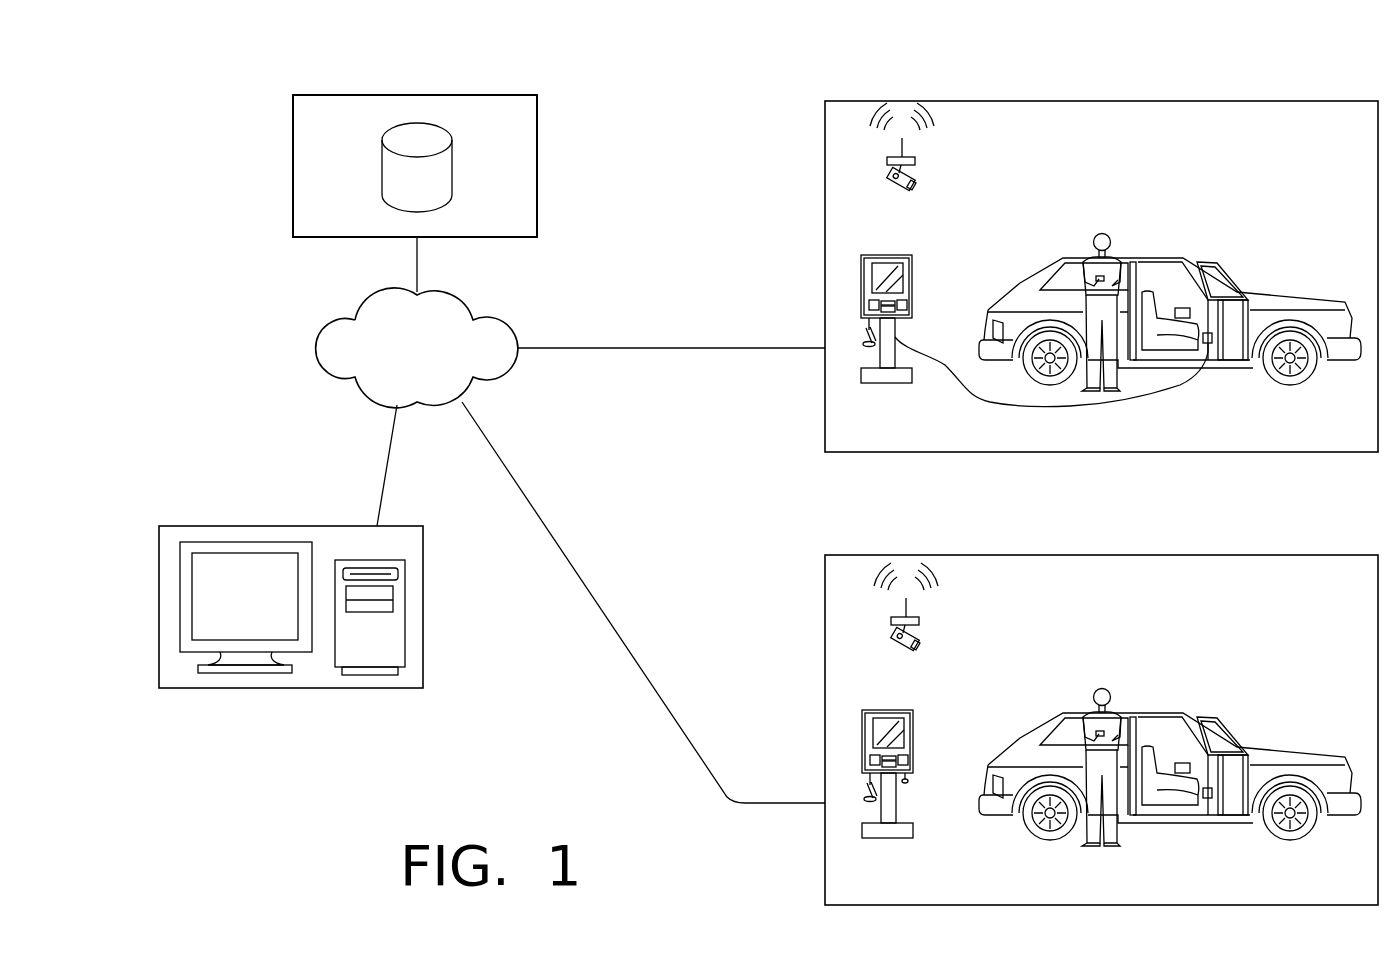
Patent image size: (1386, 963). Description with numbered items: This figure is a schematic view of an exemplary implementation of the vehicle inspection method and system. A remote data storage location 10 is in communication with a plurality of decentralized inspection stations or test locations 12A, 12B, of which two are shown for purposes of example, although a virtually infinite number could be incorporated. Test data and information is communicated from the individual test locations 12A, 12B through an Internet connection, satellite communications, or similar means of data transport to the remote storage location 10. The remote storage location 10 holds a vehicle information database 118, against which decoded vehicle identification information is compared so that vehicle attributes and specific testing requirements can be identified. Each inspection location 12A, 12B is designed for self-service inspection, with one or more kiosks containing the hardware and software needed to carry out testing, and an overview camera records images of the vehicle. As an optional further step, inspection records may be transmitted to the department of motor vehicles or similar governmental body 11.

The remote data storage location 10 is at (537, 135).
The vehicle information database 118 is at (443, 180).
The department of motor vehicles 11 is at (242, 526).
The decentralized inspection station 12A is at (1297, 107).
The decentralized inspection station 12B is at (1317, 567).